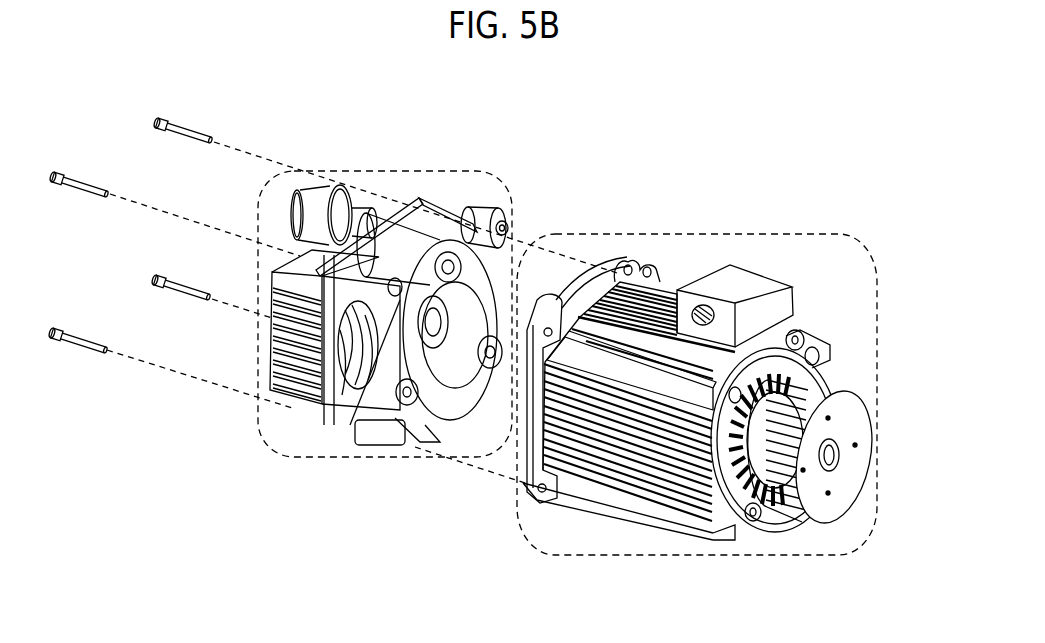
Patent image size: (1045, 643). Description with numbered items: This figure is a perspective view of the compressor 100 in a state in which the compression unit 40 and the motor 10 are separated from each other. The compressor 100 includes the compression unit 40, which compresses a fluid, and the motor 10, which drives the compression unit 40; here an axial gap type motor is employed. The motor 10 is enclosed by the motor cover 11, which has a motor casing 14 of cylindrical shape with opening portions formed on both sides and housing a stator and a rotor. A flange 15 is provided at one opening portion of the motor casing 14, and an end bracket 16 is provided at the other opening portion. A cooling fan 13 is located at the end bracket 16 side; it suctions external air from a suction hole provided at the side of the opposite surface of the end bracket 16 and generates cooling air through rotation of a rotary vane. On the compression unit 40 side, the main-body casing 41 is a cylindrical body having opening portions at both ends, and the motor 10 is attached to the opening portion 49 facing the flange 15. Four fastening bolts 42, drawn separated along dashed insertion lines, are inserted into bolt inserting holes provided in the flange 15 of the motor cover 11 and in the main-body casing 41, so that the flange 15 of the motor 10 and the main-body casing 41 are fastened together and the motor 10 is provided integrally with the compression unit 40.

The compressor 100 is at (604, 157).
The motor 10 is at (672, 233).
The motor cover 11 is at (610, 517).
The cooling fan 13 is at (850, 418).
The motor casing 14 is at (673, 467).
The flange 15 is at (520, 463).
The end bracket 16 is at (800, 340).
The compression unit 40 is at (385, 171).
The main-body casing 41 is at (505, 200).
The fastening bolt 42 is at (70, 172).
The opening portion 49 is at (413, 440).